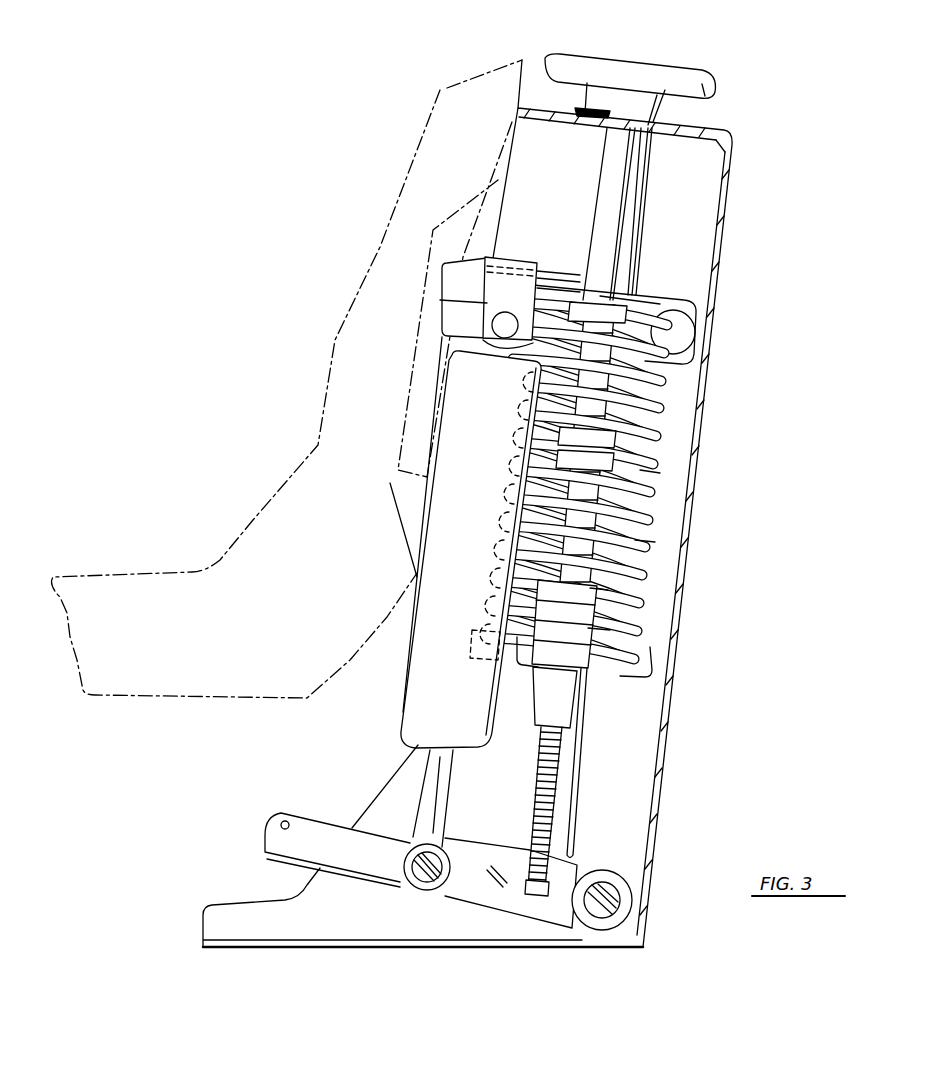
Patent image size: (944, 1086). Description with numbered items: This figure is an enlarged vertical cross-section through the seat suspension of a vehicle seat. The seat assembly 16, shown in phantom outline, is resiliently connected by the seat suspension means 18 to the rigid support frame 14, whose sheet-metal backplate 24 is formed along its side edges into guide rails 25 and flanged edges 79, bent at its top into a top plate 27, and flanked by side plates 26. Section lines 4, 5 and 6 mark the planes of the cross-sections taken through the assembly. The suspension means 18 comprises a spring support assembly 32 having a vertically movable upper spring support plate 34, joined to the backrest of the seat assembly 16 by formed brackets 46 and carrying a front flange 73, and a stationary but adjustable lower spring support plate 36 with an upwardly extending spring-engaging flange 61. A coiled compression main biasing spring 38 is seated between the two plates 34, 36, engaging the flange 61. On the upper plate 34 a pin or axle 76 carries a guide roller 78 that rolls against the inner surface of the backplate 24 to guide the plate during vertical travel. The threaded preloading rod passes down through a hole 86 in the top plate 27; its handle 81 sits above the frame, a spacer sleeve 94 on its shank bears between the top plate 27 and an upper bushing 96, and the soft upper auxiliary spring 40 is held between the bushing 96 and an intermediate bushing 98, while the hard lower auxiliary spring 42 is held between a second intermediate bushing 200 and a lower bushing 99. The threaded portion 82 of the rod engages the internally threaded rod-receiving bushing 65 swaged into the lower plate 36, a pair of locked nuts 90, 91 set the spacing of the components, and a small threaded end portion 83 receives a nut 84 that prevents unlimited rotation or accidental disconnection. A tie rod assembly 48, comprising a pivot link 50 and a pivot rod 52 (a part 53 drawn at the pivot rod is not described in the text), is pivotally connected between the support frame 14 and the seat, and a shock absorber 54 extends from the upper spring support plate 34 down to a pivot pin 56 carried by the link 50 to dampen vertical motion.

The section line 4- 4 is at (368, 507).
The section line 5- 5 is at (638, 18).
The section line 6- 6 is at (351, 220).
The support frame 14 is at (722, 400).
The seat assembly 16 is at (268, 497).
The seat suspension means 18 is at (620, 481).
The backplate 24 is at (697, 345).
The guide rails 25 is at (648, 208).
The side plates 26 is at (332, 919).
The top plate 27 is at (715, 135).
The spring support assembly 32 is at (553, 251).
The upper spring support plate 34 is at (568, 266).
The lower spring support plate 36 is at (623, 673).
The main biasing spring 38 is at (650, 487).
The upper auxiliary spring 40 is at (655, 400).
The lower auxiliary spring 42 is at (630, 544).
The brackets 46 is at (440, 347).
The tie rod assembly 48 is at (333, 810).
The pivot link 50 is at (477, 840).
The pivot rod 52 is at (622, 882).
The bushing 53 is at (604, 880).
The shock absorber 54 is at (388, 708).
The pivot pin 56 is at (423, 882).
The spring-engaging flange 61 is at (627, 653).
The rod-receiving bushing 65 is at (545, 683).
The front flange 73 is at (440, 290).
The pin or axle 76 is at (673, 332).
The guide roller 78 is at (690, 373).
The flanged edges 79 is at (648, 180).
The handle 81 is at (710, 82).
The threaded portion 82 is at (537, 788).
The threaded end portion 83 is at (530, 897).
The nut 84 is at (500, 888).
The hole 86 is at (600, 108).
The nut 90 is at (543, 633).
The nut 91 is at (612, 633).
The spacer sleeve 94 is at (602, 160).
The upper bushing 96 is at (622, 306).
The intermediate bushing 98 is at (572, 437).
The lower bushing 99 is at (608, 597).
The intermediate bushing 200 is at (570, 458).